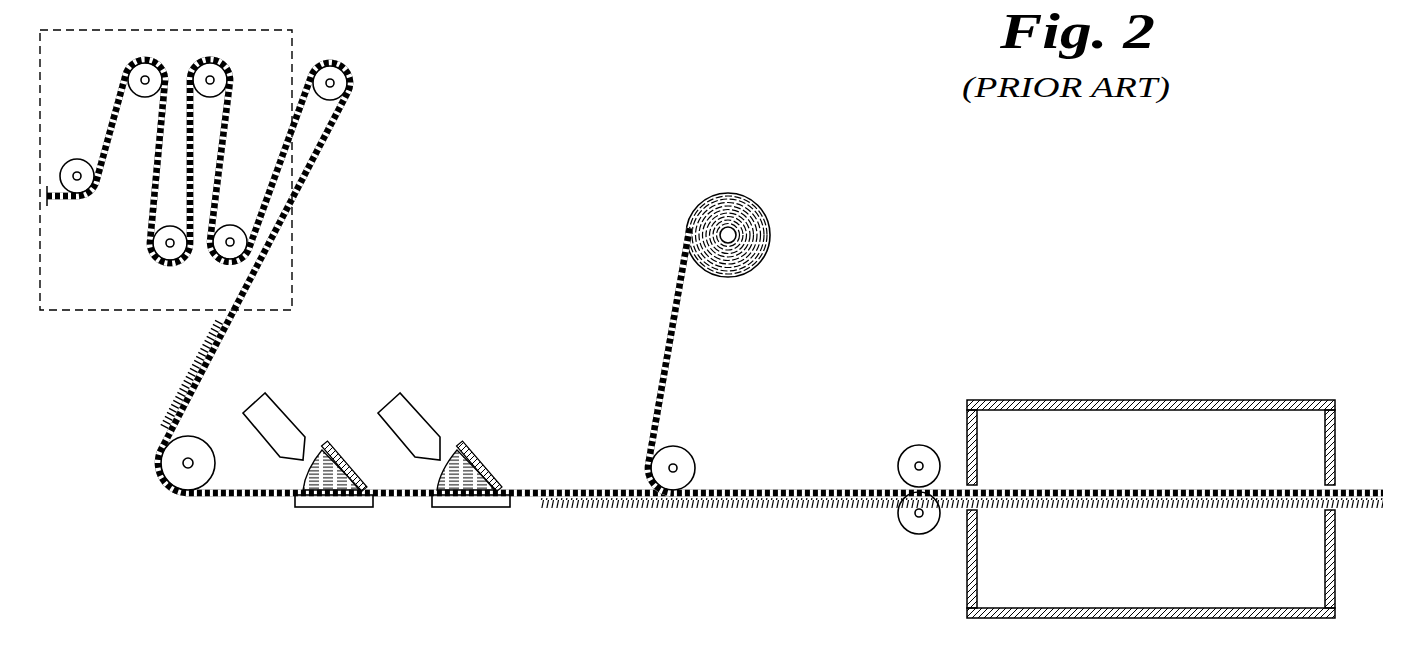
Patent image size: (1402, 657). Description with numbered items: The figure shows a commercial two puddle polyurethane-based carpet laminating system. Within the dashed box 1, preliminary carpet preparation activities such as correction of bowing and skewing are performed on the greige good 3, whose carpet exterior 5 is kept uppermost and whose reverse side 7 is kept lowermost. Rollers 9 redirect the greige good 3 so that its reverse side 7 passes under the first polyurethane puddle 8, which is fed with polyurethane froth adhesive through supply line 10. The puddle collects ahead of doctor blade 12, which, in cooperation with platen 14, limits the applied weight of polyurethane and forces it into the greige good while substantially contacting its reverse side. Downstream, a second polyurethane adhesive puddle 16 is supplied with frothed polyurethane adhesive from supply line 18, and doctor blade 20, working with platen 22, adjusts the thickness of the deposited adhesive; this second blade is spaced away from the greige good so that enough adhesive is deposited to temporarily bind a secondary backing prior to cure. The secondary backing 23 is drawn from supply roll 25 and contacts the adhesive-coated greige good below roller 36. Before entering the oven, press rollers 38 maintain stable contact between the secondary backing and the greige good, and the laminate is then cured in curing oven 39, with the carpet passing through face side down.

The dashed box 1 is at (93, 315).
The greige good 3 is at (168, 406).
The carpet exterior 5 is at (193, 362).
The reverse side 7 is at (197, 390).
The puddle 8 is at (318, 477).
The rollers 9 is at (358, 83).
The supply line 10 is at (273, 405).
The doctor blade 12 is at (328, 441).
The platen 14 is at (350, 508).
The second polyurethane adhesive puddle 16 is at (450, 477).
The supply line 18 is at (387, 400).
The doctor blade 20 is at (470, 447).
The platen 22 is at (493, 508).
The secondary backing 23 is at (668, 335).
The supply roll 25 is at (770, 235).
The roller 36 is at (698, 467).
The press rollers 38 is at (920, 445).
The curing oven 39 is at (1187, 423).